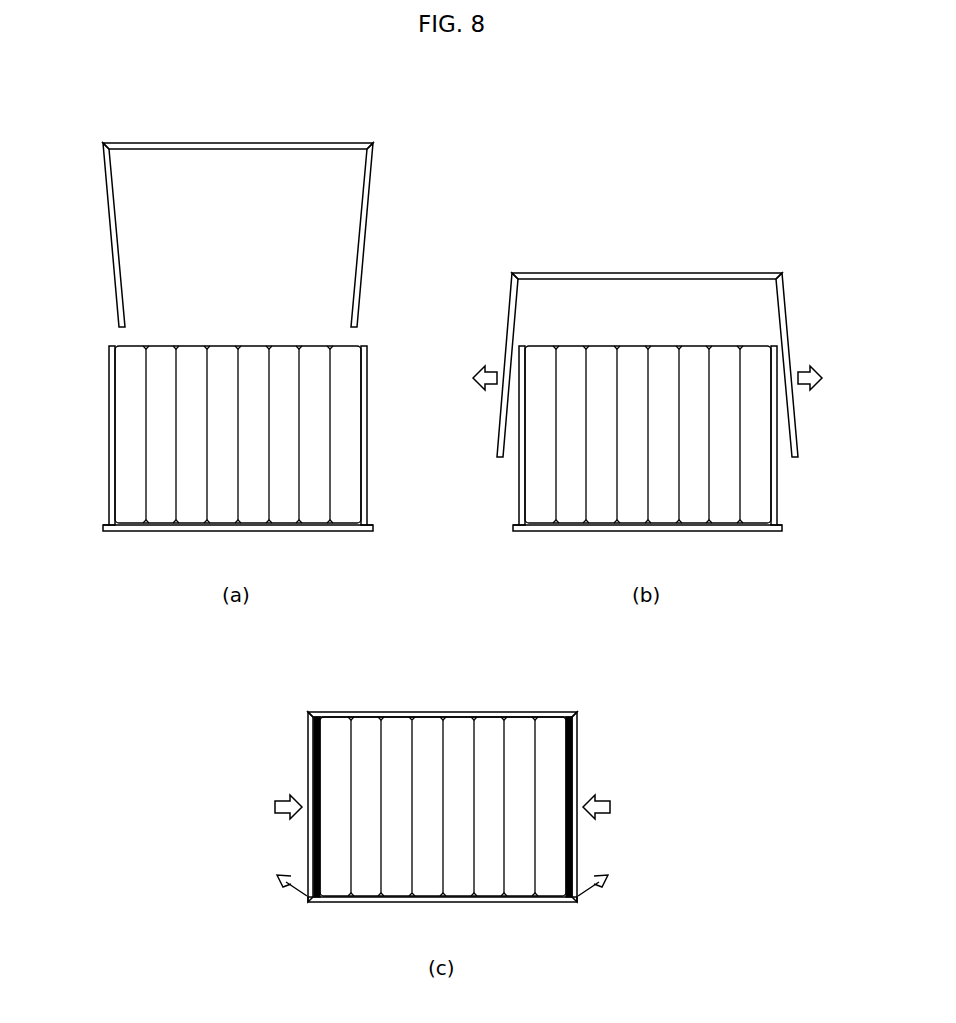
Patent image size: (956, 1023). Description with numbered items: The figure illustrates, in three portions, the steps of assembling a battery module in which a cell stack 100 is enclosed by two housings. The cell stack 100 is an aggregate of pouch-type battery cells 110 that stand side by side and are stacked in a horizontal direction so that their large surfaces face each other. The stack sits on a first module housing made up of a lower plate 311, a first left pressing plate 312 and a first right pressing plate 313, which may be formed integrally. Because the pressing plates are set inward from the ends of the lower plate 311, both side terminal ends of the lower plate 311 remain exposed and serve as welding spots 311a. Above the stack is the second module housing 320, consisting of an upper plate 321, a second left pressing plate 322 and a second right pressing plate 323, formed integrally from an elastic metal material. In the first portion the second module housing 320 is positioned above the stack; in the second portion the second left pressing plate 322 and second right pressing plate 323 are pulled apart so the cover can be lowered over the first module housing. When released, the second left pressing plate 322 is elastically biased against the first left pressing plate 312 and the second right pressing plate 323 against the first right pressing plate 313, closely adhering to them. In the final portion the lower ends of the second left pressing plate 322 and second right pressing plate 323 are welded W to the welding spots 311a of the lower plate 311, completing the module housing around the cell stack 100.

The cell stack 100 is at (268, 332).
The pouch-type battery cell 110 is at (422, 745).
The lower plate 311 is at (251, 532).
The welding spot 311a is at (103, 524).
The first left pressing plate 312 is at (108, 436).
The first right pressing plate 313 is at (368, 436).
The second module housing 320 is at (169, 121).
The upper plate 321 is at (261, 142).
The second left pressing plate 322 is at (107, 238).
The second right pressing plate 323 is at (371, 238).
The welding W is at (306, 898).